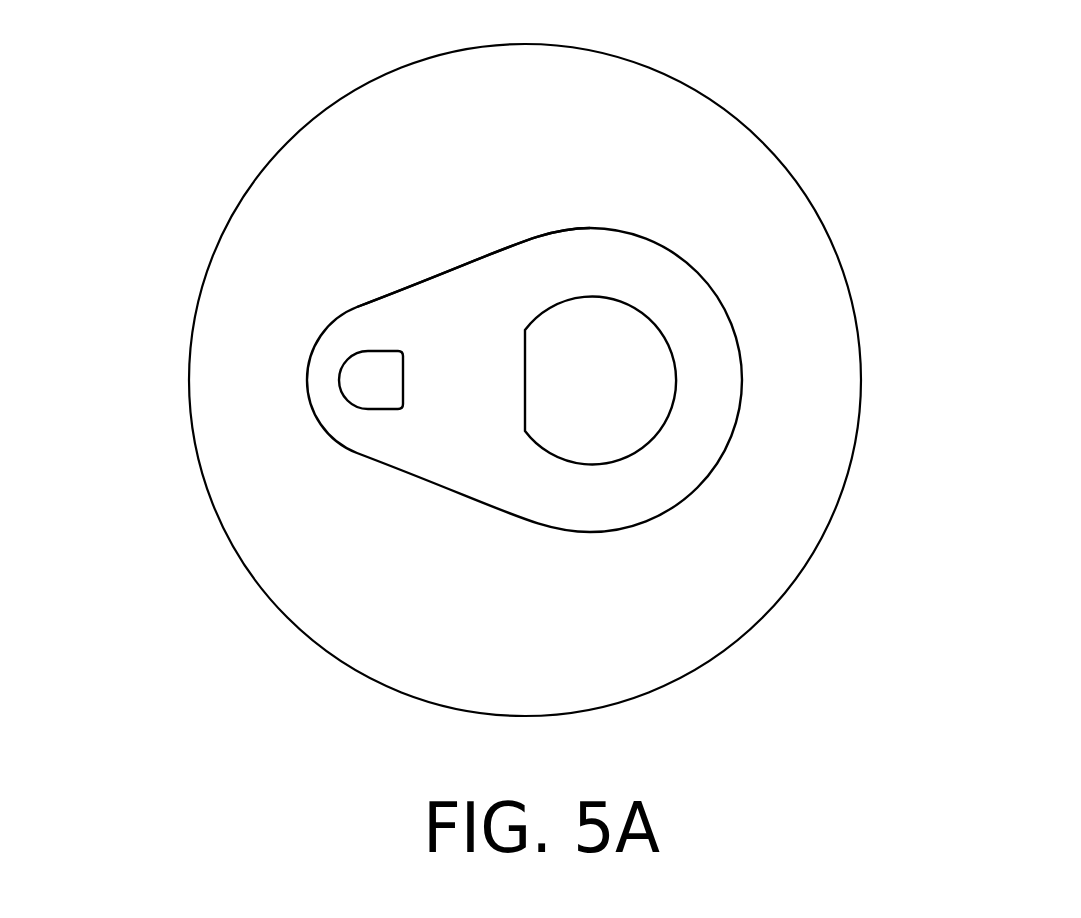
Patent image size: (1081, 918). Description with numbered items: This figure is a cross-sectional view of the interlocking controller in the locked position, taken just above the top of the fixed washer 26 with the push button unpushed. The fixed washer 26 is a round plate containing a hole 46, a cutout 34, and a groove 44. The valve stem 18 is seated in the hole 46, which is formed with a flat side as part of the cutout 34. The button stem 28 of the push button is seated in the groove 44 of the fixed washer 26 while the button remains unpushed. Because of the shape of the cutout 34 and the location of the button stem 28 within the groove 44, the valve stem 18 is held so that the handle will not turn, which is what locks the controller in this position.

The valve stem 18 is at (768, 533).
The fixed washer 26 is at (597, 380).
The button stem 28 is at (238, 461).
The cutout 34 is at (785, 375).
The groove 44 is at (376, 197).
The hole 46 is at (581, 291).